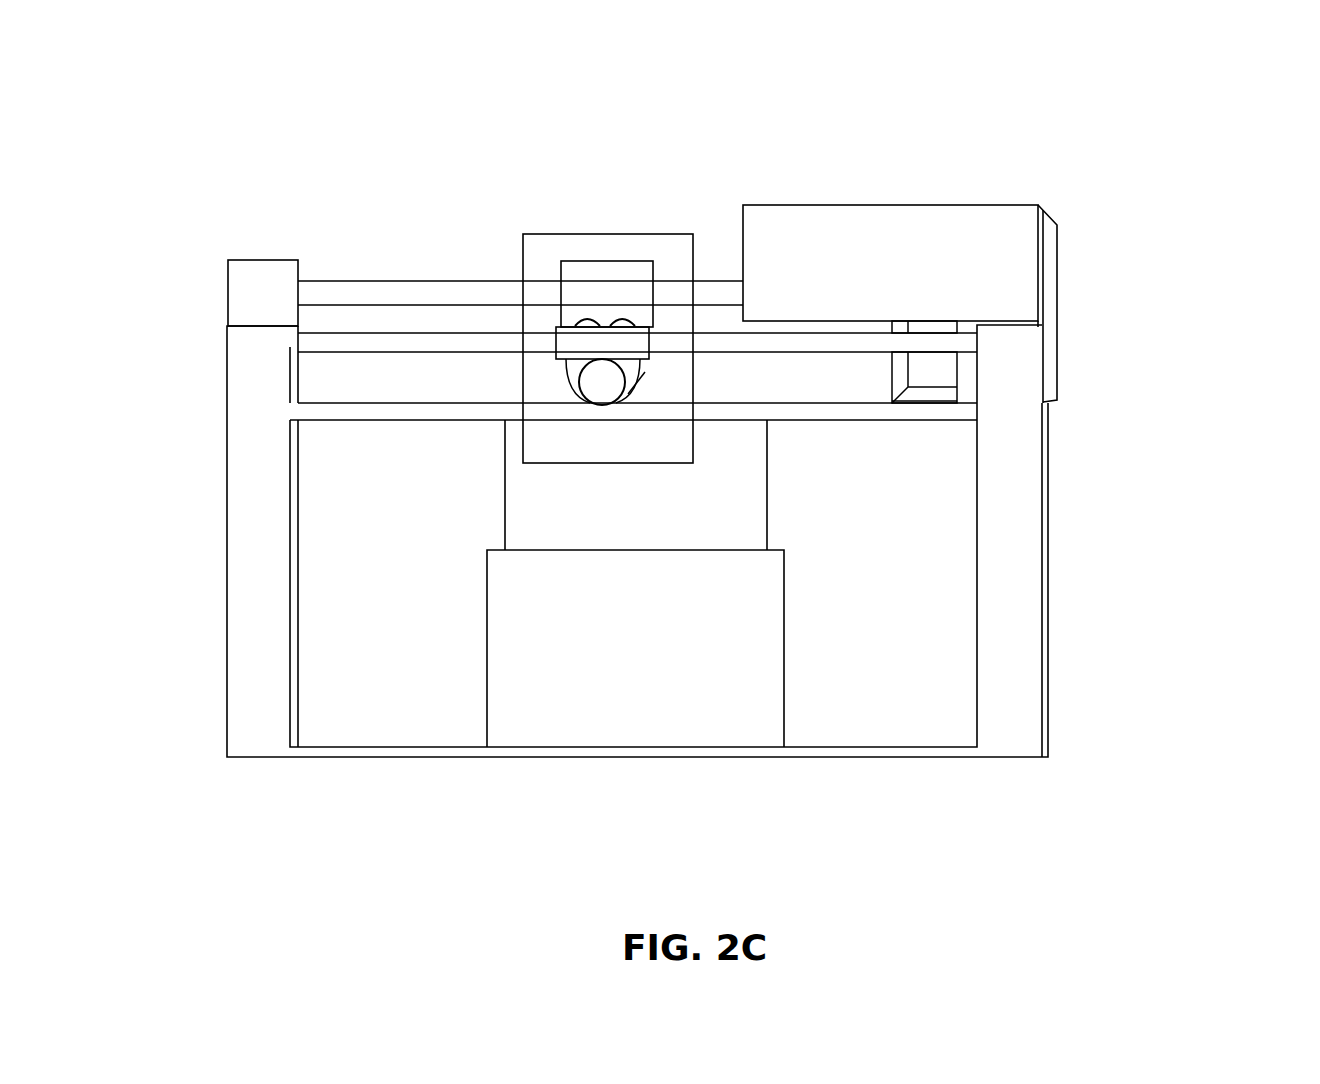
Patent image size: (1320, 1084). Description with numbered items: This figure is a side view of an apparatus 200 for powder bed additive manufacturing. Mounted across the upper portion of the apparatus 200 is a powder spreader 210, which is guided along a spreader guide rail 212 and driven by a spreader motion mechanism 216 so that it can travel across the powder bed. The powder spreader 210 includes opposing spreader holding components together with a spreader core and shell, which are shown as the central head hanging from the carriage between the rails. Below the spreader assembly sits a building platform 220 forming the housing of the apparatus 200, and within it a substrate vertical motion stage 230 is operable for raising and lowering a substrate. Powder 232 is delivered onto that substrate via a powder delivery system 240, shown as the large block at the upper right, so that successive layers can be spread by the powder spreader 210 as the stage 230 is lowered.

The apparatus 200 is at (1240, 70).
The powder spreader 210 is at (590, 290).
The spreader guide rail 212 is at (915, 344).
The spreader motion mechanism 216 is at (335, 295).
The building platform 220 is at (338, 411).
The substrate vertical motion stage 230 is at (693, 633).
The powder 232 is at (770, 500).
The powder delivery system 240 is at (912, 263).